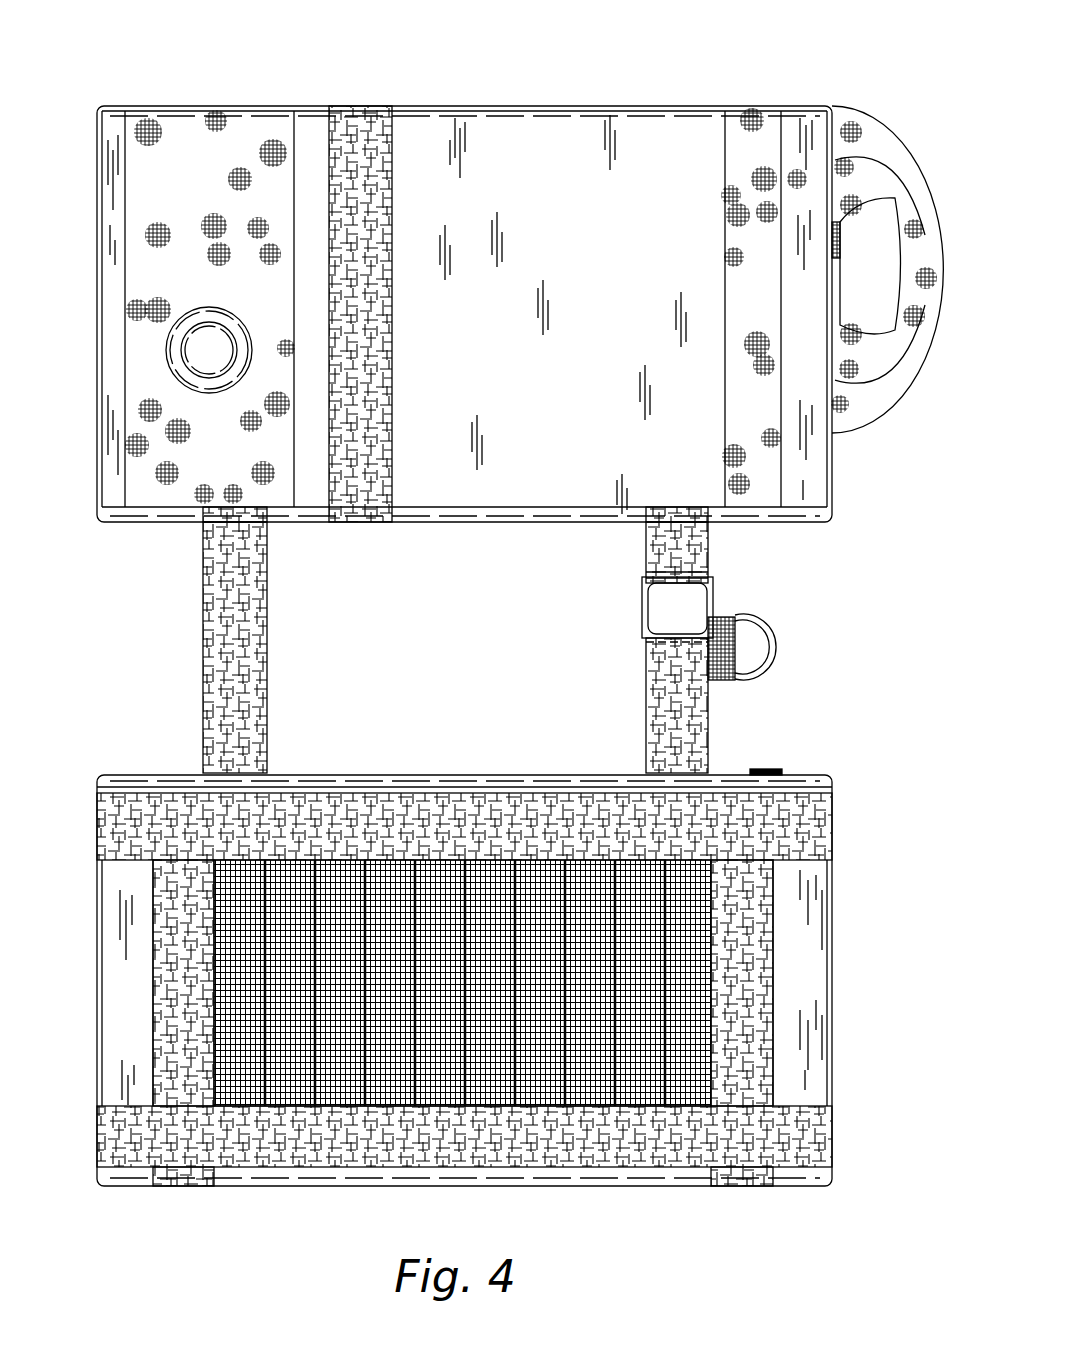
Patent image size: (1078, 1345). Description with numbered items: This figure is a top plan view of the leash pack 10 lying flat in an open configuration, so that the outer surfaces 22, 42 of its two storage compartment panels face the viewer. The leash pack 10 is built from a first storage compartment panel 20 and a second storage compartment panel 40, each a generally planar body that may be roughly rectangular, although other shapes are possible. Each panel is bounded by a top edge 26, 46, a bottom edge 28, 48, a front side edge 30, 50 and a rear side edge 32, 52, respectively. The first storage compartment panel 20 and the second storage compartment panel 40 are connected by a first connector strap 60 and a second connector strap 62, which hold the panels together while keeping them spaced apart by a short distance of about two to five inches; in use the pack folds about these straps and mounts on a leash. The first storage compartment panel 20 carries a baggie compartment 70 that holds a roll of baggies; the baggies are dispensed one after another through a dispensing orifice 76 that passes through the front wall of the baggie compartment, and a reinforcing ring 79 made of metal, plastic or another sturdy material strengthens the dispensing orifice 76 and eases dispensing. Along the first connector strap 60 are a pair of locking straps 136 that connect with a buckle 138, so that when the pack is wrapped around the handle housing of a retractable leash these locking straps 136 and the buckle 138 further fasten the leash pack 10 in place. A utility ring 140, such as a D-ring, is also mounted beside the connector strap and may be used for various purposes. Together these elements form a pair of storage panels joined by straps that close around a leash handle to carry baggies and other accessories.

The leash pack 10 is at (492, 627).
The first storage compartment panel 20 is at (494, 307).
The outer surface 22 is at (538, 408).
The top edge 26 is at (432, 522).
The bottom edge 28 is at (495, 105).
The front side edge 30 is at (832, 462).
The rear side edge 32 is at (97, 413).
The second storage compartment panel 40 is at (712, 1148).
The outer surface 42 is at (456, 1151).
The top edge 46 is at (463, 985).
The bottom edge 48 is at (232, 1186).
The front side edge 50 is at (832, 1143).
The rear side edge 52 is at (97, 1145).
The first connector strap 60 is at (721, 647).
The second connector strap 62 is at (262, 620).
The baggie compartment 70 is at (210, 340).
The dispensing orifice 76 is at (223, 319).
The reinforcing ring 79 is at (193, 311).
The locking straps 136 is at (705, 540).
The buckle 138 is at (660, 613).
The utility ring 140 is at (775, 641).